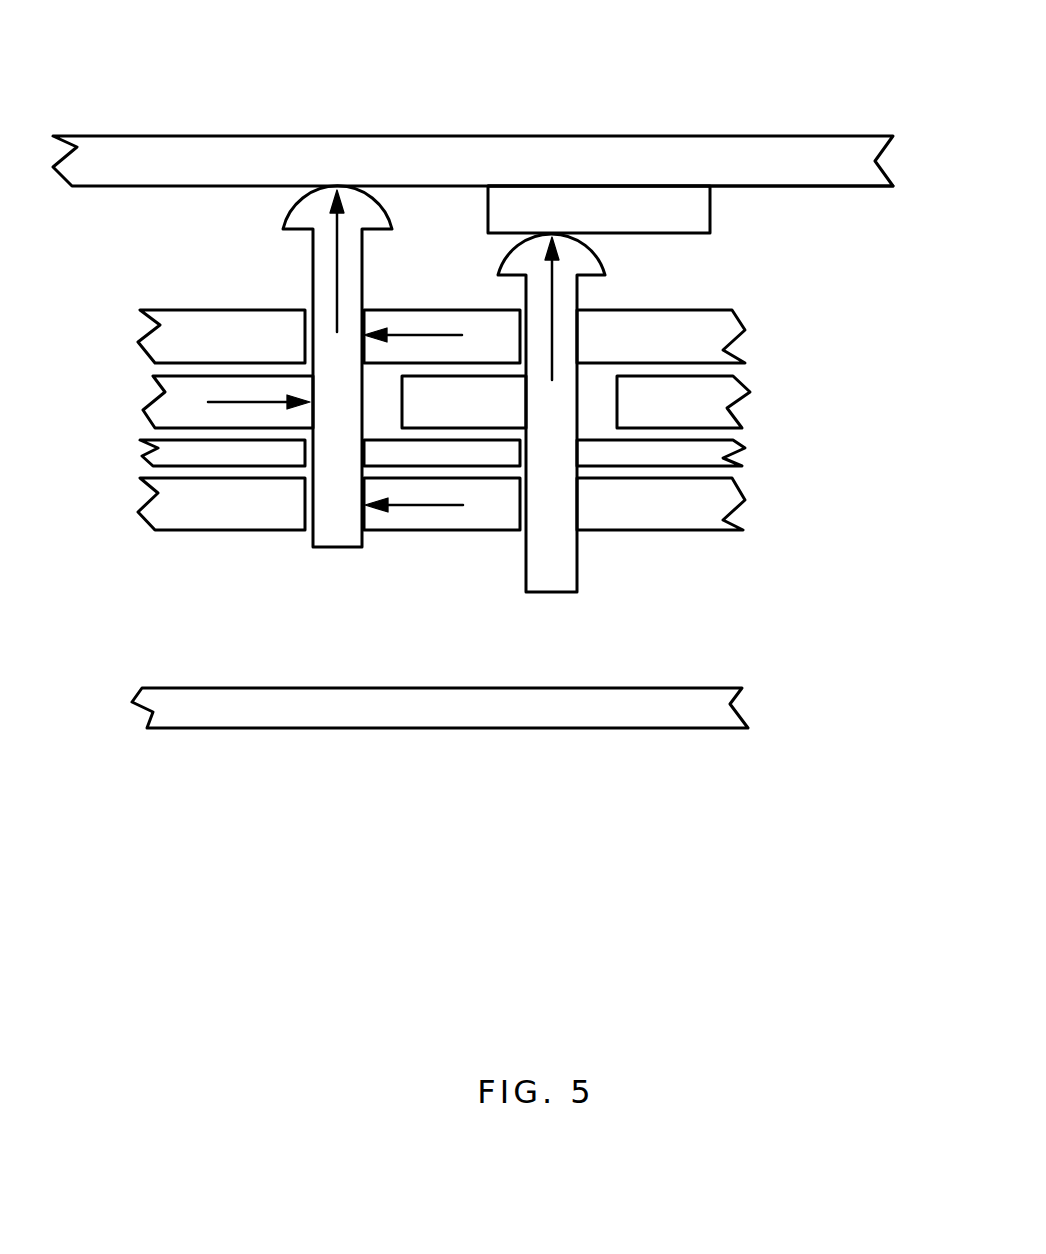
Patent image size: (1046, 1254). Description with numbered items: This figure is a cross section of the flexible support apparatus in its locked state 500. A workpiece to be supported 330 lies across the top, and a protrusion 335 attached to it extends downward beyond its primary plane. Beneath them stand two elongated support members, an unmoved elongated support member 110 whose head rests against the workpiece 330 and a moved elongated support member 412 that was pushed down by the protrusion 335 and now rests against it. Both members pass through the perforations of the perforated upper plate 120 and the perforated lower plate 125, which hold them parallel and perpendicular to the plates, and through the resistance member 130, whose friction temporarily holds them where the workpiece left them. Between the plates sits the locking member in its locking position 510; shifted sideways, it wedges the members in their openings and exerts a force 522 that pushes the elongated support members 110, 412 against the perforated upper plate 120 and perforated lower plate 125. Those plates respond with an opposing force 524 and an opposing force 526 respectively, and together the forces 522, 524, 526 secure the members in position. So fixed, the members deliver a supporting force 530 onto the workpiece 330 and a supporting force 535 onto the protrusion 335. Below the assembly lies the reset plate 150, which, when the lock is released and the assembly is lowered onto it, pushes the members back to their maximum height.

The elongated support member 110 is at (303, 212).
The perforated upper plate 120 is at (183, 338).
The perforated lower plate 125 is at (745, 499).
The resistance member 130 is at (745, 456).
The reset plate 150 is at (653, 712).
The workpiece to be supported 330 is at (742, 158).
The protrusion 335 is at (633, 212).
The moved elongated support member 412 is at (547, 490).
The locked state 500 is at (113, 653).
The locking member in locking position 510 is at (700, 402).
The force 522 is at (255, 402).
The opposing force 524 is at (410, 332).
The opposing force 526 is at (428, 505).
The supporting force 530 is at (342, 242).
The supporting force 535 is at (547, 302).